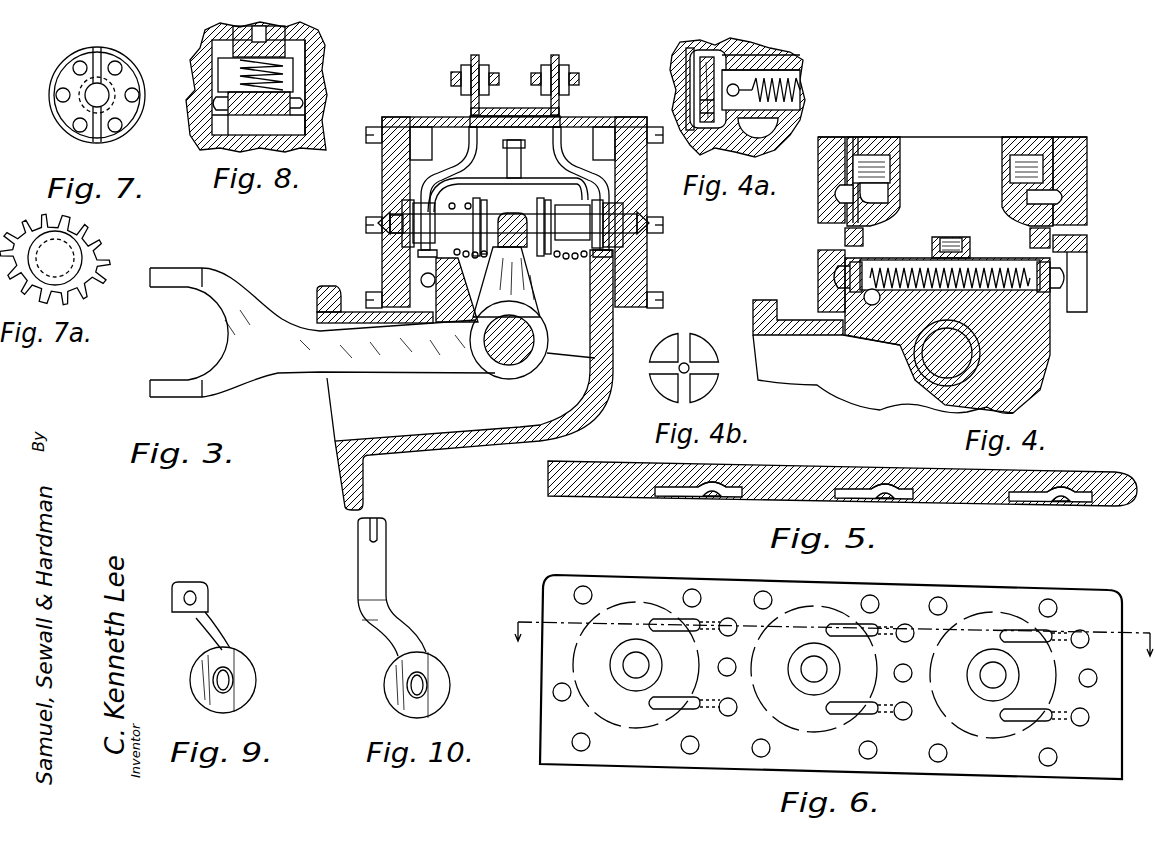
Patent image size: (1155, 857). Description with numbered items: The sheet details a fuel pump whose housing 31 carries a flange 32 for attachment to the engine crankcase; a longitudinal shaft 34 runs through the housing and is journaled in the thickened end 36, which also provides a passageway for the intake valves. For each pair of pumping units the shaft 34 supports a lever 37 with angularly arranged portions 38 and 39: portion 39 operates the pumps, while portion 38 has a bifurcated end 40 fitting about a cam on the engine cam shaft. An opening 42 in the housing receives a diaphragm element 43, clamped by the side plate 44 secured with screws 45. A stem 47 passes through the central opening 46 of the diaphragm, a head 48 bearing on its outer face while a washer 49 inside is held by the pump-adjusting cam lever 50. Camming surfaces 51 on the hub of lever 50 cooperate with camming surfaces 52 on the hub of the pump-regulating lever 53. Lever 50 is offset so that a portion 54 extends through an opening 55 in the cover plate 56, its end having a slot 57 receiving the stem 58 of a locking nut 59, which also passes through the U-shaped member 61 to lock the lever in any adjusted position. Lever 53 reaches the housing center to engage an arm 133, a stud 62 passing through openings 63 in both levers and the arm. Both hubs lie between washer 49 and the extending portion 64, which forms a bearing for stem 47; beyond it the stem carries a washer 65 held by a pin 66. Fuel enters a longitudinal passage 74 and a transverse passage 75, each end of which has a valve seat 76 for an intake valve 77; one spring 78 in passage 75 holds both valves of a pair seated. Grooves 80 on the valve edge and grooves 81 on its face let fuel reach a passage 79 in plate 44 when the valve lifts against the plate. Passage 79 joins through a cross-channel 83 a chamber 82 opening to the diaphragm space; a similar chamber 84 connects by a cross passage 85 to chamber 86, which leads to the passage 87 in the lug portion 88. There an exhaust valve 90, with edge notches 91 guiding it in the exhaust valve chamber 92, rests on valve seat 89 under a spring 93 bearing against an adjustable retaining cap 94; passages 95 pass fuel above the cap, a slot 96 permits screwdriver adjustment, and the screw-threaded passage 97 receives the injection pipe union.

In FIG. 3, the pump housing 31 is at (502, 437).
In FIG. 4A, the pump housing 31 is at (795, 118).
In FIG. 4, the pump housing 31 is at (1040, 355).
In FIG. 3, the flange 32 is at (325, 290).
In FIG. 4, the flange 32 is at (765, 300).
In FIG. 3, the longitudinal shaft 34 is at (518, 347).
In FIG. 4, the longitudinal shaft 34 is at (935, 368).
In FIG. 4, the end of the housing 36 is at (915, 357).
In FIG. 3, the lever 37 is at (540, 342).
In FIG. 3, the portion of lever 38 is at (358, 366).
In FIG. 3, the portion of lever 39 is at (525, 290).
In FIG. 3, the bifurcated end 40 is at (190, 277).
In FIG. 3, the opening 42 is at (420, 150).
In FIG. 3, the diaphragm element 43 is at (413, 205).
In FIG. 3, the side plate 44 is at (392, 122).
In FIG. 4, the side plate 44 is at (825, 305).
In FIG. 5, the side plate 44 is at (570, 472).
In FIG. 6, the side plate 44 is at (996, 603).
In FIG. 3, the screws 45 is at (370, 130).
In FIG. 3, the central opening 46 is at (388, 222).
In FIG. 3, the stem 47 is at (452, 203).
In FIG. 3, the head 48 is at (402, 212).
In FIG. 3, the washer 49 is at (390, 223).
In FIG. 3, the pump-adjusting cam lever 50 is at (455, 155).
In FIG. 10, the pump-adjusting cam lever 50 is at (398, 612).
In FIG. 10, the camming surfaces 51 is at (432, 668).
In FIG. 9, the camming surfaces 52 is at (242, 665).
In FIG. 3, the pump-regulating lever 53 is at (498, 176).
In FIG. 9, the pump-regulating lever 53 is at (218, 622).
In FIG. 3, the portion of lever 54 is at (473, 70).
In FIG. 3, the opening 55 is at (469, 173).
In FIG. 3, the cover plate 56 is at (412, 117).
In FIG. 10, the slot 57 is at (374, 526).
In FIG. 3, the stem 58 is at (496, 82).
In FIG. 3, the locking nut 59 is at (484, 75).
In FIG. 3, the U-shaped member 61 is at (496, 108).
In FIG. 3, the stud 62 is at (522, 160).
In FIG. 9, the openings 63 is at (185, 596).
In FIG. 3, the extending portion 64 is at (442, 250).
In FIG. 3, the washer 65 is at (561, 214).
In FIG. 3, the pin 66 is at (520, 257).
In FIG. 3, the longitudinal passage 74 is at (430, 284).
In FIG. 4A, the longitudinal passage 74 is at (770, 120).
In FIG. 4, the longitudinal passage 74 is at (871, 305).
In FIG. 4A, the transverse passage 75 is at (785, 72).
In FIG. 4, the transverse passage 75 is at (978, 266).
In FIG. 4A, the valve seat 76 is at (760, 58).
In FIG. 4A, the intake valve 77 is at (703, 65).
In FIG. 4, the intake valve 77 is at (872, 265).
In FIG. 4B, the intake valve 77 is at (673, 355).
In FIG. 4A, the spring 78 is at (790, 90).
In FIG. 4, the spring 78 is at (903, 265).
In FIG. 4A, the passage 79 is at (690, 90).
In FIG. 4, the passage 79 is at (838, 270).
In FIG. 6, the passage 79 is at (729, 716).
In FIG. 4A, the grooves 80 is at (703, 112).
In FIG. 4B, the grooves 80 is at (684, 333).
In FIG. 4A, the grooves 81 is at (702, 72).
In FIG. 4B, the grooves 81 is at (695, 352).
In FIG. 6, the chamber 82 is at (672, 706).
In FIG. 6, the cross-channel 83 is at (710, 712).
In FIG. 5, the chamber 84 is at (668, 487).
In FIG. 6, the chamber 84 is at (670, 621).
In FIG. 5, the cross passage 85 is at (722, 484).
In FIG. 6, the cross passage 85 is at (712, 622).
In FIG. 4, the chamber 86 is at (836, 198).
In FIG. 5, the chamber 86 is at (712, 497).
In FIG. 6, the chamber 86 is at (732, 620).
In FIG. 8, the passage 87 is at (244, 148).
In FIG. 4, the passage 87 is at (890, 193).
In FIG. 8, the lug portion 88 is at (322, 78).
In FIG. 4, the lug portion 88 is at (900, 170).
In FIG. 8, the valve seat 89 is at (232, 126).
In FIG. 8, the exhaust valve 90 is at (222, 103).
In FIG. 7A, the exhaust valve 90 is at (48, 250).
In FIG. 7A, the notches 91 is at (90, 244).
In FIG. 8, the exhaust valve chamber 92 is at (228, 80).
In FIG. 8, the spring 93 is at (245, 70).
In FIG. 7, the adjustable retaining cap 94 is at (68, 74).
In FIG. 8, the adjustable retaining cap 94 is at (240, 40).
In FIG. 7, the passages 95 is at (103, 92).
In FIG. 8, the passages 95 is at (306, 42).
In FIG. 7, the slot 96 is at (96, 66).
In FIG. 4, the screw-threaded passage 97 is at (858, 148).
In FIG. 3, the arm 133 is at (520, 116).